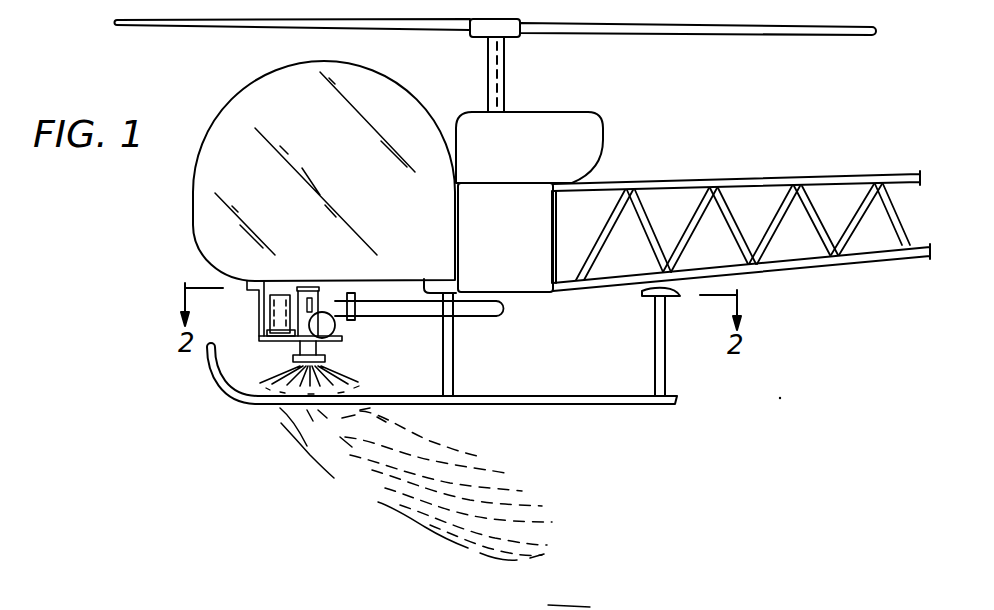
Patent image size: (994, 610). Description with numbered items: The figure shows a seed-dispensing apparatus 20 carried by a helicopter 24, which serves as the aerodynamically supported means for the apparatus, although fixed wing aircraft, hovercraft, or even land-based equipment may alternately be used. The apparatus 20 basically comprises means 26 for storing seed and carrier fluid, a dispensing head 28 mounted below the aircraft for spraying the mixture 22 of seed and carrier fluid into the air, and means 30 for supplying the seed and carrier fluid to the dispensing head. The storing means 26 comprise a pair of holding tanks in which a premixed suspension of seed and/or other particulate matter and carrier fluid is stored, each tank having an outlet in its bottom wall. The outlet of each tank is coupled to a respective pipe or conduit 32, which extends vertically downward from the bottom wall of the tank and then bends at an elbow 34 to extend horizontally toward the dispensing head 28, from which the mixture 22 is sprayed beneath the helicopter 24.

The apparatus 20 is at (420, 346).
The mixture 22 is at (378, 459).
The helicopter 24 is at (582, 38).
The means for storing seed and carrier fluid 26 is at (488, 206).
The dispensing head 28 is at (284, 389).
The means for supplying the seed and carrier fluid 30 is at (340, 328).
The conduit 32 is at (478, 300).
The elbow 34 is at (507, 309).